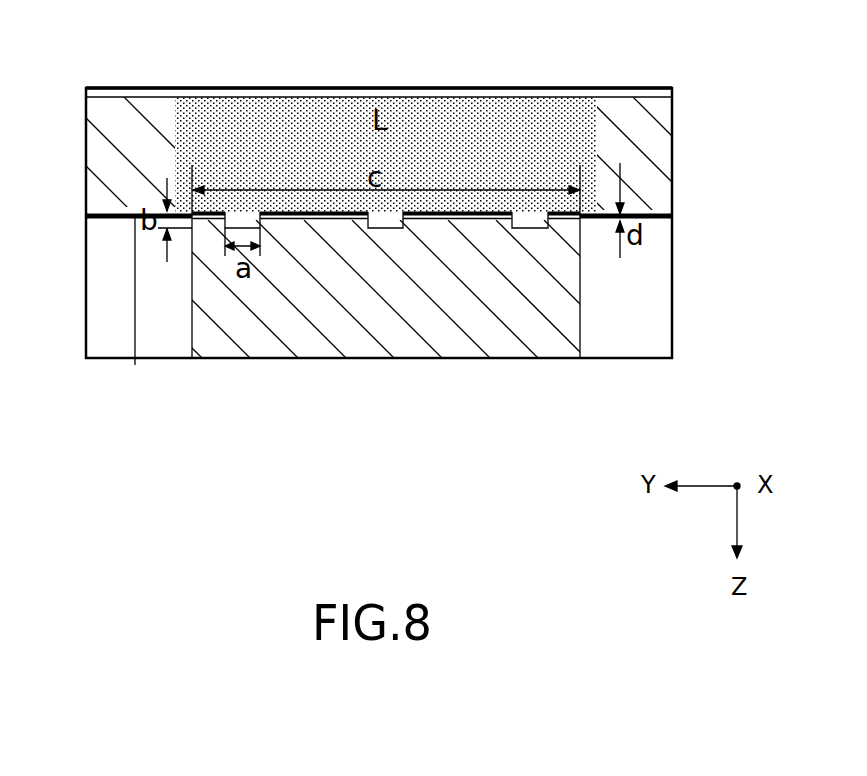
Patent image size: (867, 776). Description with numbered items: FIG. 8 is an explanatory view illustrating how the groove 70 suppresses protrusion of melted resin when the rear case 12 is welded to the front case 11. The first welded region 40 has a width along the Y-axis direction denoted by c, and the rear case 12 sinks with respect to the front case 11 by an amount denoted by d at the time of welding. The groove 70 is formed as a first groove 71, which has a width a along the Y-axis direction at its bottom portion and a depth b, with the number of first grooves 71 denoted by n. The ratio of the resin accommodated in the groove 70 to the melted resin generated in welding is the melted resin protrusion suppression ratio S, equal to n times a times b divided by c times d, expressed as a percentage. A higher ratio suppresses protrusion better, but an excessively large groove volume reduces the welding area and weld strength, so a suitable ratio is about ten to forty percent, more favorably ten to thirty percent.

The front case 11 is at (633, 302).
The rear case 12 is at (112, 82).
The first welded region 40 is at (575, 263).
The groove 70 is at (412, 130).
The first groove 71 is at (516, 212).